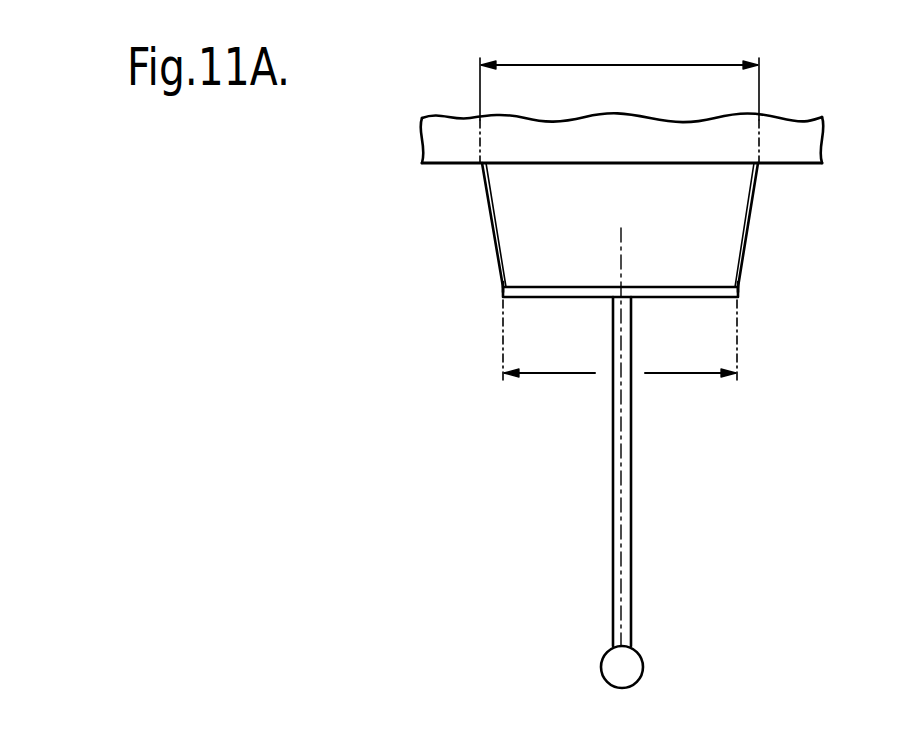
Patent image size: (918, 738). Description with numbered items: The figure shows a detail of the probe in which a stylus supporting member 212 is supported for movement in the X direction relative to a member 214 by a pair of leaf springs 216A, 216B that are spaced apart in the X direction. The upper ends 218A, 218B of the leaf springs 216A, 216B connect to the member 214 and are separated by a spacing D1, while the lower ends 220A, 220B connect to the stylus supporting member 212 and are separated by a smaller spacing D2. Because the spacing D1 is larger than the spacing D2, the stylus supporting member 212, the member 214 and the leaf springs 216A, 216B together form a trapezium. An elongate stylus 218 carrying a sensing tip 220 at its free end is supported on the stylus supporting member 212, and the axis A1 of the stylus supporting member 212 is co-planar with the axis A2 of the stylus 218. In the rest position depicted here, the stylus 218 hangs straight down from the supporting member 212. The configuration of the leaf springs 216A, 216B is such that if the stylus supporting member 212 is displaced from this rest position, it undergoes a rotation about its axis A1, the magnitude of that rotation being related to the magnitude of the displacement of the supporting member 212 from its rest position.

The member 214 is at (783, 127).
The stylus supporting member 212 is at (584, 297).
The leaf spring 216A is at (492, 230).
The leaf spring 216B is at (748, 233).
The end of leaf spring 218A is at (485, 183).
The end of leaf spring 218B is at (753, 193).
The end of leaf spring 220A is at (500, 292).
The end of leaf spring 220B is at (742, 288).
The elongate stylus 218 is at (628, 490).
The sensing tip 220 is at (608, 667).
The axis of the stylus supporting member A1 is at (620, 287).
The axis of the stylus A2 is at (623, 613).
The spacing of adjacent ends D1 is at (619, 99).
The spacing of adjacent ends D2 is at (620, 340).